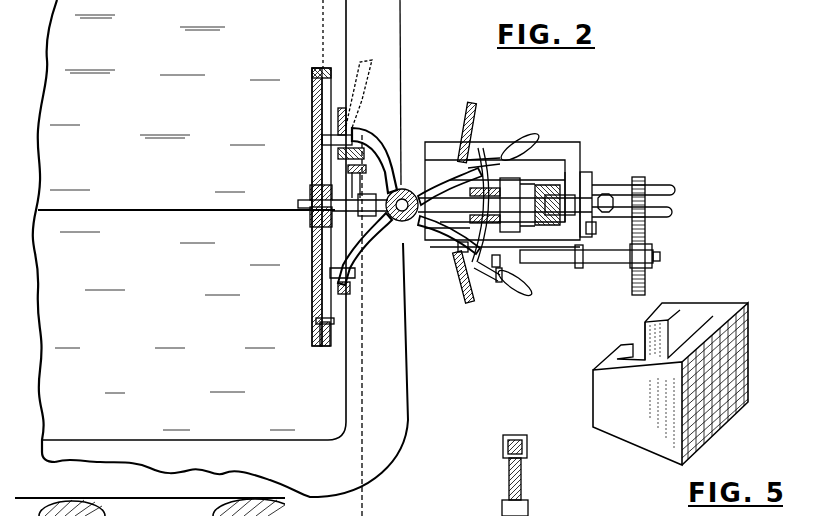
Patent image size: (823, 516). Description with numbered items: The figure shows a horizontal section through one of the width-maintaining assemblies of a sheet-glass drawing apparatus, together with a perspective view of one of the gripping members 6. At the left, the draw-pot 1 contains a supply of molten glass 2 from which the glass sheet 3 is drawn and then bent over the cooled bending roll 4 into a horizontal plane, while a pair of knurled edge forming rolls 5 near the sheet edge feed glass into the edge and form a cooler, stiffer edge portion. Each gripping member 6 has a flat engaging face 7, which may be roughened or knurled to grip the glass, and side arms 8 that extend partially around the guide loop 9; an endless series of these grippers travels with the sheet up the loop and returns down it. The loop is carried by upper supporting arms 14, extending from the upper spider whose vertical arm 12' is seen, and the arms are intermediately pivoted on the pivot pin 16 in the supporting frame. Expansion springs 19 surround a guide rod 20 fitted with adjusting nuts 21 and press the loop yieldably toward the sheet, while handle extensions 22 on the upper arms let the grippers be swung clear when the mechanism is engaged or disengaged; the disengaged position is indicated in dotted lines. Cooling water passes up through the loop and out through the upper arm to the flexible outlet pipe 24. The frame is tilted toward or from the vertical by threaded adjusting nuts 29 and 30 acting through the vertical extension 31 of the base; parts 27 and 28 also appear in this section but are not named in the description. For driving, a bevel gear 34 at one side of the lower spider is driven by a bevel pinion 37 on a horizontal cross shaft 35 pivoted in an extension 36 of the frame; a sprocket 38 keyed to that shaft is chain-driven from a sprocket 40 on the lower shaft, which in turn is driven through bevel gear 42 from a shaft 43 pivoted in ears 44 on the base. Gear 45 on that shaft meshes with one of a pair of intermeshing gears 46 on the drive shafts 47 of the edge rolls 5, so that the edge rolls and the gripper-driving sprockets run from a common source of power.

In FIG. 2, the draw-pot 1 is at (388, 362).
In FIG. 2, the molten glass 2 is at (164, 231).
In FIG. 2, the glass sheet 3 is at (192, 210).
In FIG. 2, the bending roll 4 is at (367, 135).
In FIG. 2, the edge forming rolls 5 is at (308, 192).
In FIG. 2, the gripping members 6 is at (320, 344).
In FIG. 5, the engaging face 7 is at (748, 377).
In FIG. 5, the side arms 8 is at (690, 313).
In FIG. 2, the guide loop 9 is at (503, 448).
In FIG. 2, the vertical arm 12' is at (535, 487).
In FIG. 2, the upper supporting arms 14 is at (404, 168).
In FIG. 2, the pivot pin 16 is at (428, 168).
In FIG. 2, the expansion springs 19 is at (490, 170).
In FIG. 2, the guide rod 20 is at (495, 268).
In FIG. 2, the adjusting nuts 21 is at (465, 252).
In FIG. 2, the handle extensions 22 is at (514, 133).
In FIG. 2, the lever 24 is at (474, 124).
In FIG. 2, the housing 27 is at (550, 195).
In FIG. 2, the shaft 28 is at (510, 223).
In FIG. 2, the adjusting nut 29 is at (575, 195).
In FIG. 2, the adjusting nut 30 is at (591, 234).
In FIG. 2, the vertical extension 31 is at (603, 192).
In FIG. 2, the bevel gear 34 is at (352, 128).
In FIG. 2, the cross shaft 35 is at (372, 252).
In FIG. 2, the extension 36 is at (413, 253).
In FIG. 2, the bevel pinion 37 is at (358, 272).
In FIG. 2, the sprocket 38 is at (316, 172).
In FIG. 2, the sprocket 40 is at (537, 163).
In FIG. 2, the bevel gear 42 is at (500, 272).
In FIG. 2, the shaft 43 is at (627, 252).
In FIG. 2, the ears 44 is at (579, 268).
In FIG. 2, the gear 45 is at (648, 236).
In FIG. 2, the intermeshing gears 46 is at (638, 180).
In FIG. 2, the drive shafts 47 is at (664, 182).